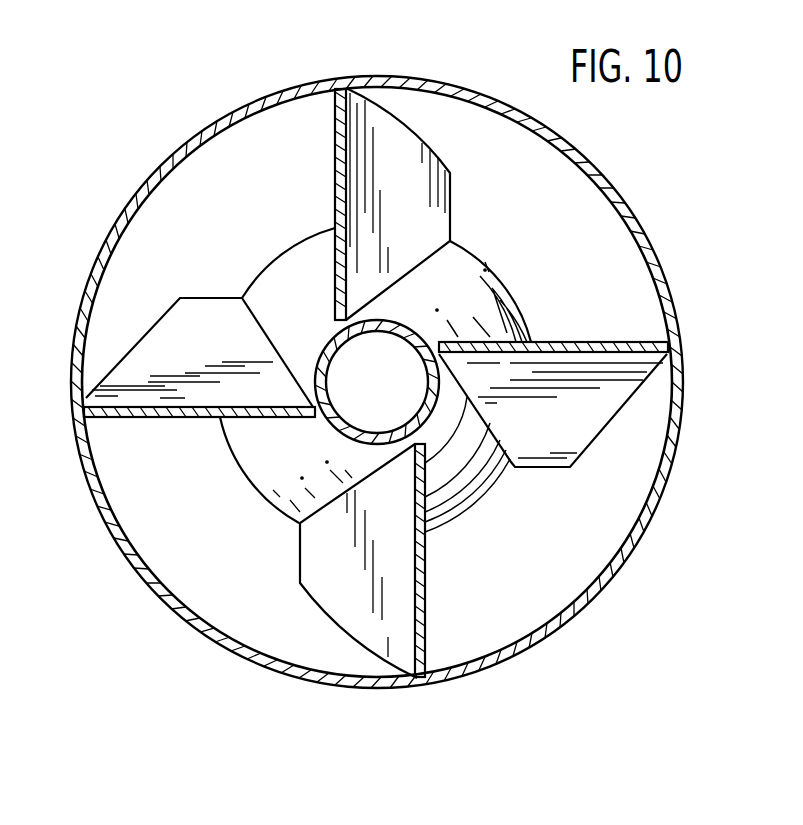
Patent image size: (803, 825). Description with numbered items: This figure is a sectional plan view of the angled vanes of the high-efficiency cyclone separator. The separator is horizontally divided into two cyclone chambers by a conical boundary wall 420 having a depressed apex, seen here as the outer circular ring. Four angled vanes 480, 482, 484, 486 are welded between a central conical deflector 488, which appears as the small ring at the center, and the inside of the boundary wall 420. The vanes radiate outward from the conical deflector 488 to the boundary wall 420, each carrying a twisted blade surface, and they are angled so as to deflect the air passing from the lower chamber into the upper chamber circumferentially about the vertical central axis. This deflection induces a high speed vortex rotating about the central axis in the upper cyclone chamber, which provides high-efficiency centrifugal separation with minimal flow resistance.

The conical boundary wall 420 is at (190, 587).
The angled vane 480 is at (176, 323).
The angled vane 482 is at (425, 222).
The angled vane 484 is at (597, 418).
The angled vane 486 is at (320, 573).
The conical deflector 488 is at (468, 278).